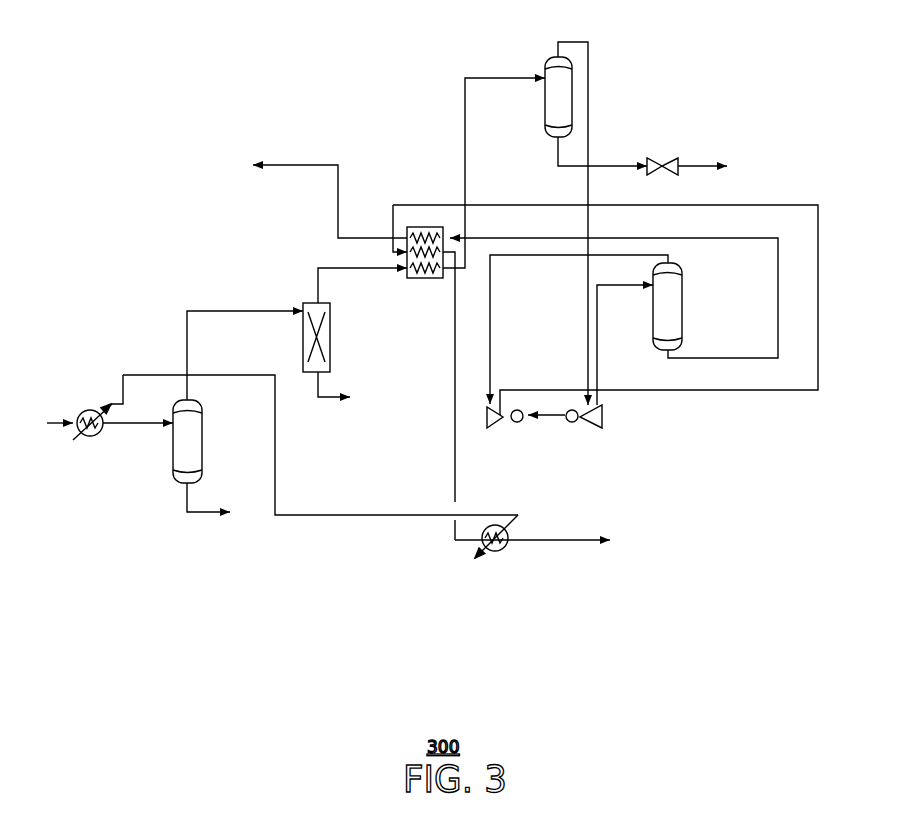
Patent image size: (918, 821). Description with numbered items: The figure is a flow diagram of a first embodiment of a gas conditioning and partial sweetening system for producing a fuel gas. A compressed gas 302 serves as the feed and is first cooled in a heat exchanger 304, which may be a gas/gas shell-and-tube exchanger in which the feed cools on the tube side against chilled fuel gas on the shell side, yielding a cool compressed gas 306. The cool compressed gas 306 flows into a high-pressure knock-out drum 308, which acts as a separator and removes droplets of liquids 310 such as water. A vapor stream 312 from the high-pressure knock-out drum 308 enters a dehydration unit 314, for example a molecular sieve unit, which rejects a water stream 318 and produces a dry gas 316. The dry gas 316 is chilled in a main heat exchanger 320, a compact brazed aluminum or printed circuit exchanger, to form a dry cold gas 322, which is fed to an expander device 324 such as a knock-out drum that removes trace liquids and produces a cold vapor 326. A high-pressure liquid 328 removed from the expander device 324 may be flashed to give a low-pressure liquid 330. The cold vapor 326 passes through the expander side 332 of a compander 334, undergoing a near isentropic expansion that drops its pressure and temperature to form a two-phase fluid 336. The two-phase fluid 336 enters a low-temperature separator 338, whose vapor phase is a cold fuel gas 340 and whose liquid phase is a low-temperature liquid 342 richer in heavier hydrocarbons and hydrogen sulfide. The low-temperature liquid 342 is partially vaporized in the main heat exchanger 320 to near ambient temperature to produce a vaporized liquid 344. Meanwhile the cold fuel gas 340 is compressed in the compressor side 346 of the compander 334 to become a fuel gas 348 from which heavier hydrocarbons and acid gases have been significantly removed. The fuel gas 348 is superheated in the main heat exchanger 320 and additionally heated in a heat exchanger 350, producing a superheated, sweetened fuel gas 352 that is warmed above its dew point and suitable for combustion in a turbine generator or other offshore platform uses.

The compressed gas 302 is at (50, 423).
The heat exchanger 304 is at (92, 437).
The cool compressed gas 306 is at (130, 414).
The high-pressure knock-out drum 308 is at (173, 462).
The liquids 310 is at (200, 513).
The vapor stream 312 is at (215, 311).
The dehydration unit 314 is at (330, 327).
The dry gas 316 is at (350, 264).
The water stream 318 is at (320, 386).
The main heat exchanger 320 is at (425, 280).
The dry cold gas 322 is at (462, 121).
The expander device 324 is at (557, 53).
The cold vapor 326 is at (590, 60).
The high-pressure liquid 328 is at (610, 166).
The low-pressure liquid 330 is at (695, 166).
The expander side 332 is at (603, 413).
The compander 334 is at (605, 455).
The two-phase fluid 336 is at (598, 363).
The low-temperature separator 338 is at (683, 292).
The cold fuel gas 340 is at (490, 312).
The low-temperature liquid 342 is at (713, 358).
The vaporized liquid 344 is at (340, 170).
The compressor side 346 is at (497, 430).
The fuel gas 348 is at (817, 228).
The heat exchanger 350 is at (495, 553).
The superheated, sweetened fuel gas 352 is at (565, 542).